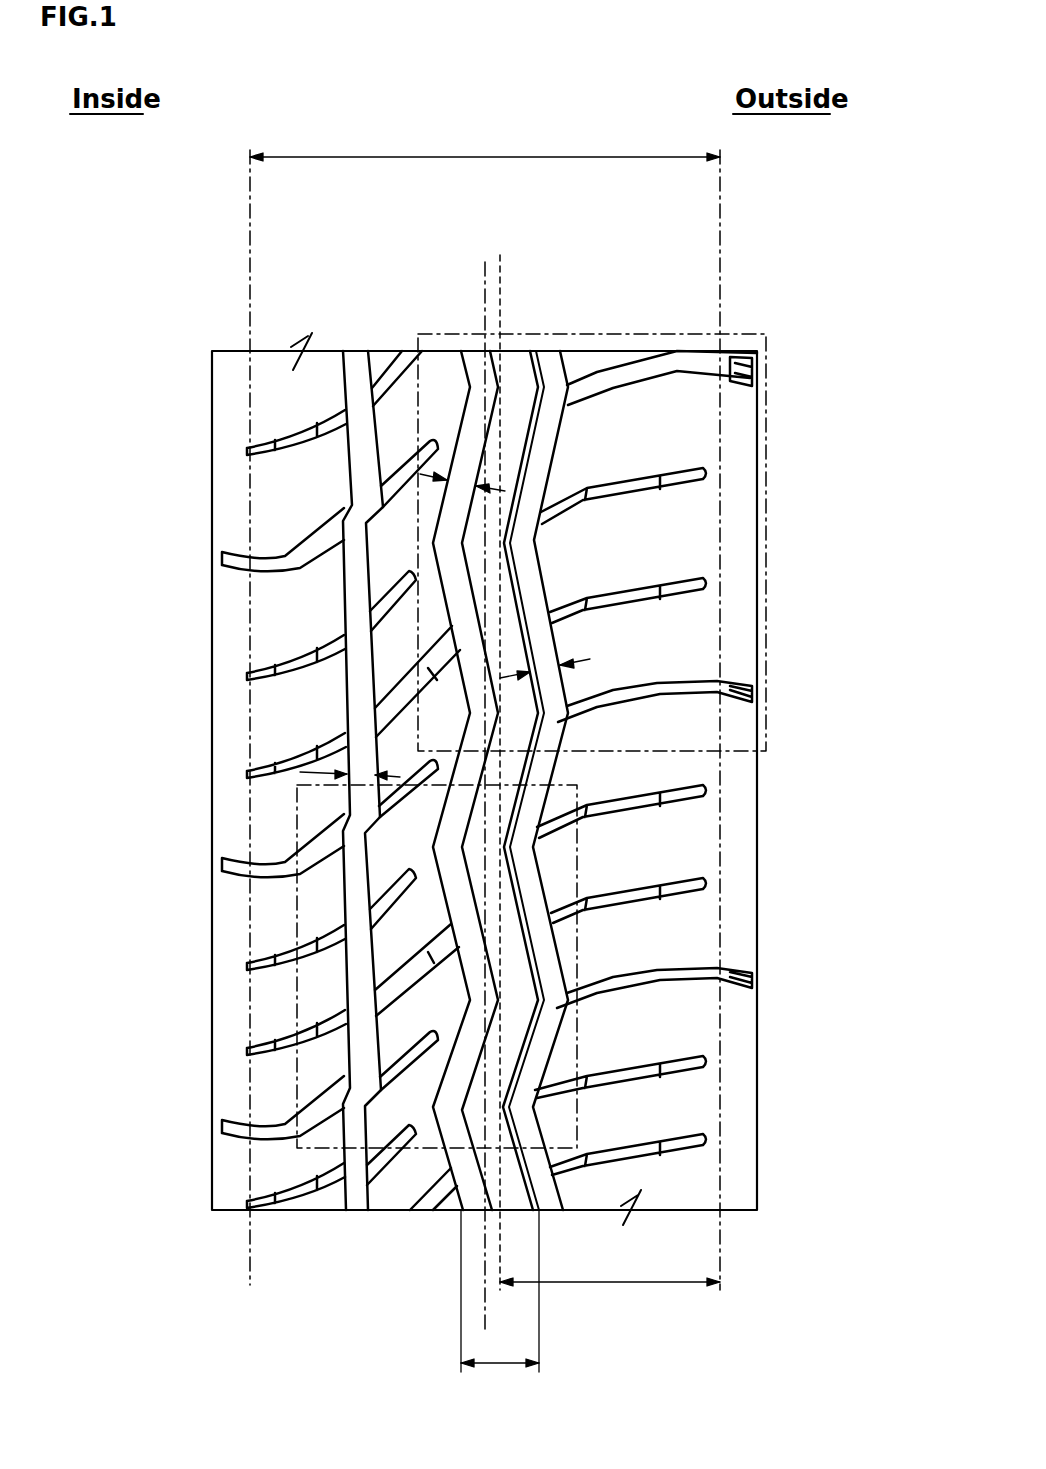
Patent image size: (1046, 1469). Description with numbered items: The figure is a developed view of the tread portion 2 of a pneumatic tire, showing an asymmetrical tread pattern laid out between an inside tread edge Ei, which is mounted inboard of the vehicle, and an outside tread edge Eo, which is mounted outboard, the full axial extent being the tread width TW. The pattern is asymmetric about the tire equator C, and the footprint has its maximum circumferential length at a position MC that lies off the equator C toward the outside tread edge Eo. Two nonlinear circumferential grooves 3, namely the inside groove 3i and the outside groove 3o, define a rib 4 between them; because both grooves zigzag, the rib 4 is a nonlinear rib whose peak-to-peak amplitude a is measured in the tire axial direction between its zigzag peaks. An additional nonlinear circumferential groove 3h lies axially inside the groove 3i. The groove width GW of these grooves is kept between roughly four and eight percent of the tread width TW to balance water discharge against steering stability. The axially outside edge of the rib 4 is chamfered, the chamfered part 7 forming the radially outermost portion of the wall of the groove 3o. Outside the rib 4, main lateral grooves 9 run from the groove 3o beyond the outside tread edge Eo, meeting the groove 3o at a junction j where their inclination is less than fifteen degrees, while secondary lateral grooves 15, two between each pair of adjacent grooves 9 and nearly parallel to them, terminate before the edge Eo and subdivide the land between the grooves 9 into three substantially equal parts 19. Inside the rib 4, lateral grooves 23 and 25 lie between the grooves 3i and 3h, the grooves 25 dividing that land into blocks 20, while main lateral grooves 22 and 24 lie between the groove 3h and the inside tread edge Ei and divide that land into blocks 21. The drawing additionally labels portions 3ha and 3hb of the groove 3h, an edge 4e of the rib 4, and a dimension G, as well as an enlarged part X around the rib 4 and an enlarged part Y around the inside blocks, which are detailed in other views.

The tread portion 2 is at (273, 380).
The circumferential groove 3 is at (474, 780).
The inside circumferential groove 3i is at (355, 590).
The outside circumferential groove 3o is at (537, 467).
The additional circumferential groove 3h is at (350, 893).
The groove portion a 3ha is at (352, 1015).
The groove portion b 3hb is at (360, 1093).
The rib 4 is at (510, 360).
The groove edge 4e is at (537, 430).
The chamfered part 7 is at (530, 940).
The main lateral groove 9 is at (620, 372).
The secondary lateral groove 15 is at (631, 484).
The part 19 is at (641, 962).
The block 20 is at (412, 666).
The block 21 is at (319, 726).
The main lateral groove 22 is at (282, 556).
The secondary lateral groove 23 is at (425, 475).
The main lateral groove 24 is at (292, 668).
The main lateral groove 25 is at (352, 1053).
The tread width TW is at (485, 145).
The groove width GW is at (463, 470).
The tire equator C is at (483, 782).
The maximum tread length position MC is at (505, 330).
The inside tread edge Ei is at (250, 220).
The outside tread edge Eo is at (720, 222).
The part X is at (750, 334).
The part Y is at (280, 812).
The distance G is at (610, 1270).
The amplitude a is at (500, 1291).
The junction j is at (556, 398).